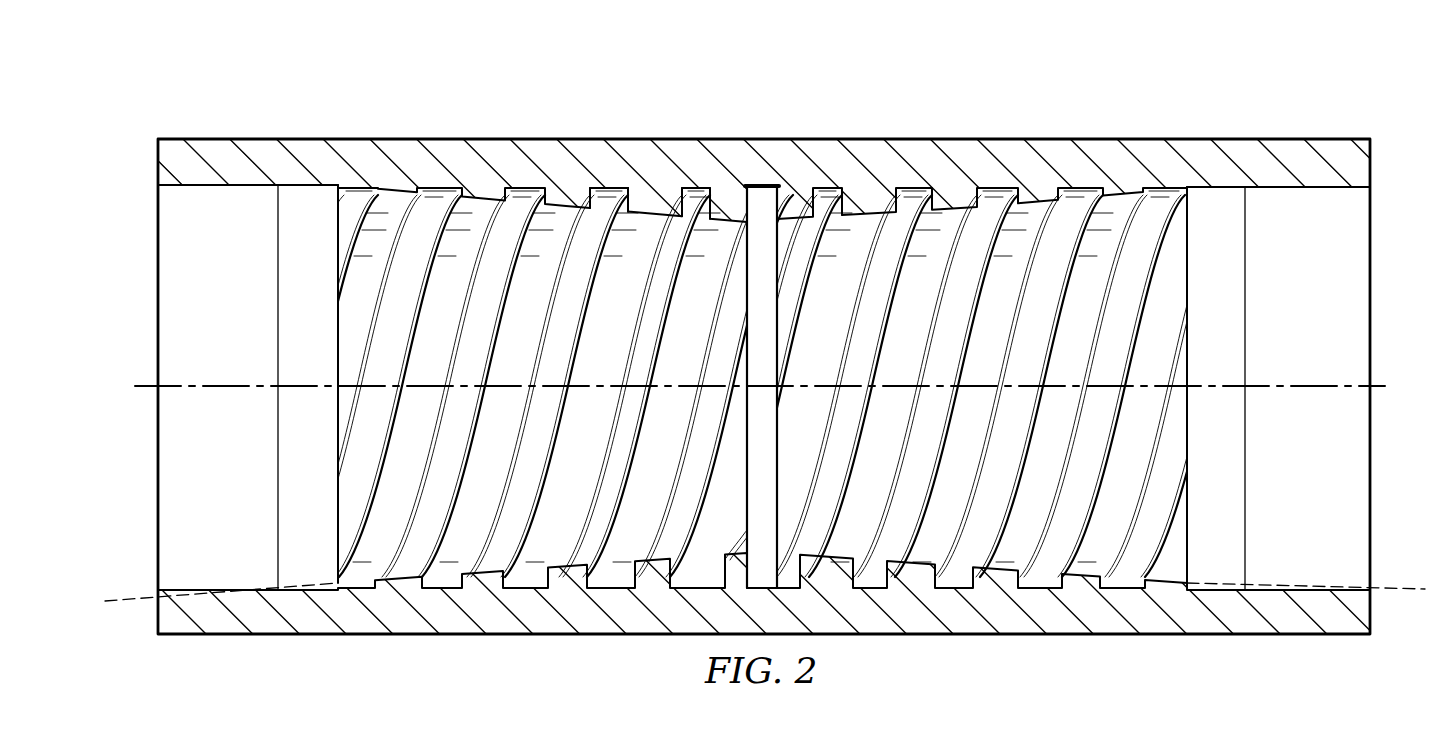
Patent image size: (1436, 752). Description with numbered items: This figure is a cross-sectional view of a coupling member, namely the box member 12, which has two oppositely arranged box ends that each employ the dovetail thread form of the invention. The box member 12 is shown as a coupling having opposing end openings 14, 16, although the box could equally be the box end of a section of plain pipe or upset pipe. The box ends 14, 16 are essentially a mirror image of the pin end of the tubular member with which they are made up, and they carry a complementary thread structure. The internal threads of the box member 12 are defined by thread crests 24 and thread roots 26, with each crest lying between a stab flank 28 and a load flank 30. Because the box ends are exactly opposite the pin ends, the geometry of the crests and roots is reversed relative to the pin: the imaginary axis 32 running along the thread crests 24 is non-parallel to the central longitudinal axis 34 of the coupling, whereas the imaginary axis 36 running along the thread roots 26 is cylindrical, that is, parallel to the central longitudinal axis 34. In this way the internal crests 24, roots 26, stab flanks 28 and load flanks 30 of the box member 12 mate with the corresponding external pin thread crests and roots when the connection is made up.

The box member 12 is at (904, 79).
The end opening 14 is at (187, 266).
The end opening 16 is at (1352, 278).
The thread crest 24 is at (655, 220).
The thread root 26 is at (592, 198).
The stab flank 28 is at (620, 200).
The load flank 30 is at (712, 198).
The imaginary axis of the crests 32 is at (128, 603).
The central longitudinal axis 34 is at (215, 388).
The imaginary axis of the roots 36 is at (1390, 592).